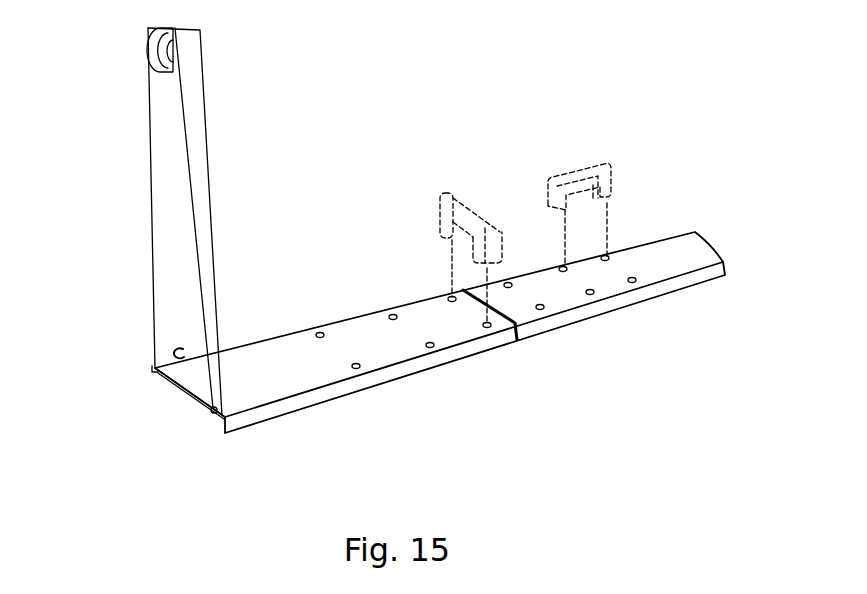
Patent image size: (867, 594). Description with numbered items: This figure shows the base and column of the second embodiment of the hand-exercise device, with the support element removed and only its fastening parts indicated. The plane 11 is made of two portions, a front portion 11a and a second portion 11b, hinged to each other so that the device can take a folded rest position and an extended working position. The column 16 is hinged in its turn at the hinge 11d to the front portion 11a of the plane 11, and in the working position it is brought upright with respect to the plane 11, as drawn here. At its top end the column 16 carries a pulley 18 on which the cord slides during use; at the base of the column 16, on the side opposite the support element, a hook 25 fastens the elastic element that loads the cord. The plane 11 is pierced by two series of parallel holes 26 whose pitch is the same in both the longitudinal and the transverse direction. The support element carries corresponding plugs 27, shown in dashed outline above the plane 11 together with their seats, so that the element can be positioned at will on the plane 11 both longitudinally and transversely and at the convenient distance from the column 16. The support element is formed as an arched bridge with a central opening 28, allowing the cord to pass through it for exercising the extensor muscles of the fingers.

The plane 11 is at (418, 386).
The front portion of the plane 11a is at (276, 414).
The rear portion of the plane 11b is at (592, 315).
The hinge of the column 11d is at (177, 386).
The column 16 is at (198, 98).
The pulley 18 is at (155, 52).
The hook 25 is at (172, 350).
The holes 26 is at (320, 333).
The plugs 27 is at (448, 240).
The central opening 28 is at (473, 237).